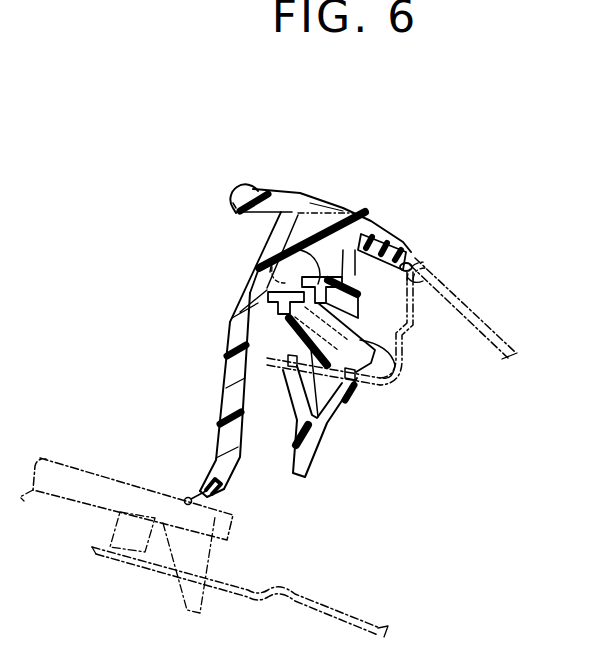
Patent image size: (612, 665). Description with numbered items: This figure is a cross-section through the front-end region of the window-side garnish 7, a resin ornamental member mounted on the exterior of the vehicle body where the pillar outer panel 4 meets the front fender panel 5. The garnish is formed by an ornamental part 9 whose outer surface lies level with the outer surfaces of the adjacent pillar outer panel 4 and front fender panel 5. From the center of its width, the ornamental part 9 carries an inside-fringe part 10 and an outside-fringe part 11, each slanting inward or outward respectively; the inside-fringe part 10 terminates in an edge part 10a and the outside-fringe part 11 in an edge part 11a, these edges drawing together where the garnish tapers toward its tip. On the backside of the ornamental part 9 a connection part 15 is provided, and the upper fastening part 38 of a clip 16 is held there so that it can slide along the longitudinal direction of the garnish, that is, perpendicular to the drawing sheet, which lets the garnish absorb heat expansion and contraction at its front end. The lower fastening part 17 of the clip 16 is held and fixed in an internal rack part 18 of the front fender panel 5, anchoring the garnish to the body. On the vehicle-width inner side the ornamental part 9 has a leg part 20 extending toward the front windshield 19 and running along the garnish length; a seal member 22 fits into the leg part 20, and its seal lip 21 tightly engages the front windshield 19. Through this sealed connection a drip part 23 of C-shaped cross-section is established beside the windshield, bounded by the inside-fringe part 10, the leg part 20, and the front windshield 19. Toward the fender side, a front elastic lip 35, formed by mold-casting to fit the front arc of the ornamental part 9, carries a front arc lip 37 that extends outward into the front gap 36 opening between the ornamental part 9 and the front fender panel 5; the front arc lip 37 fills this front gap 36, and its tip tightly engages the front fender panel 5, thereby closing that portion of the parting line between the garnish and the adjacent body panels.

The pillar outer panel 4 is at (350, 614).
The front fender panel 5 is at (455, 294).
The window-side garnish 7 is at (294, 176).
The ornamental part 9 is at (330, 199).
The inside-fringe part 10 is at (267, 193).
The edge part of inside-fringe part 10a is at (228, 202).
The outside-fringe part 11 is at (380, 230).
The edge part of outside-fringe part 11a is at (410, 254).
The connection part 15 is at (373, 257).
The clip 16 is at (357, 295).
The lower fastening part 17 is at (328, 417).
The internal rack part 18 is at (265, 362).
The front windshield 19 is at (77, 467).
The leg part 20 is at (222, 370).
The seal lip 21 is at (186, 499).
The seal member 22 is at (210, 500).
The drip part 23 is at (205, 310).
The front elastic lip 35 is at (362, 298).
The front gap 36 is at (410, 254).
The front arc lip 37 is at (408, 278).
The upper fastening part 38 is at (298, 247).